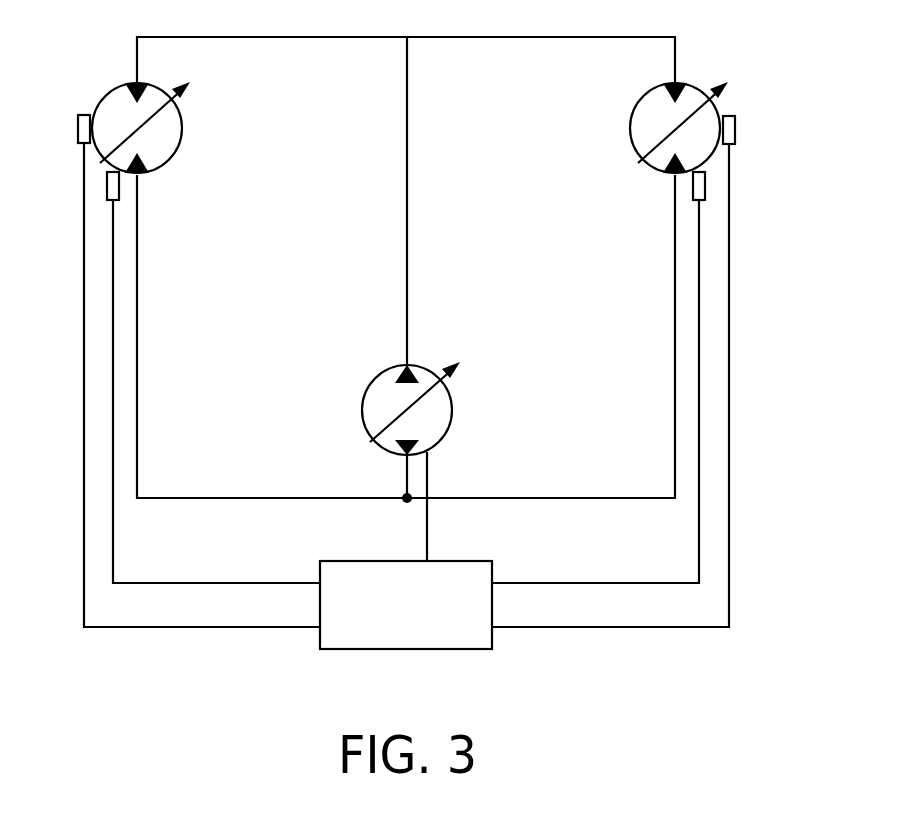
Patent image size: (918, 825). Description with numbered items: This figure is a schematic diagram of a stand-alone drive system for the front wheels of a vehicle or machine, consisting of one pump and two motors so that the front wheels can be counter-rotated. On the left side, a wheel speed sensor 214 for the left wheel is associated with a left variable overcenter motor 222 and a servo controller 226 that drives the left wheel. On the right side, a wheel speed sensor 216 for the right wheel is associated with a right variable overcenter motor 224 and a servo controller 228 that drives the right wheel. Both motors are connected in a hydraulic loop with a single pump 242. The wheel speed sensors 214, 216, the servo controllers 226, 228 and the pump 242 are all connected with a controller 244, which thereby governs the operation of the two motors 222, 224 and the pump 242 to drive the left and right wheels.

The wheel speed sensor 214 is at (83, 118).
The wheel speed sensor 216 is at (728, 127).
The left variable overcenter motor 222 is at (174, 130).
The right variable overcenter motor 224 is at (638, 128).
The servo controller 226 is at (115, 192).
The servo controller 228 is at (698, 190).
The pump 242 is at (362, 406).
The controller 244 is at (462, 570).